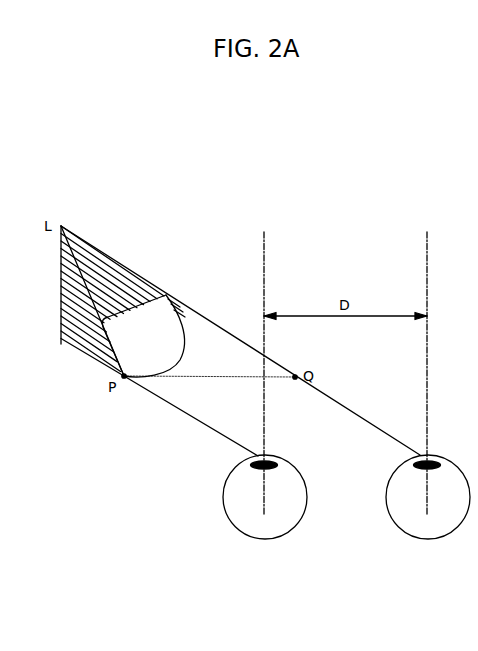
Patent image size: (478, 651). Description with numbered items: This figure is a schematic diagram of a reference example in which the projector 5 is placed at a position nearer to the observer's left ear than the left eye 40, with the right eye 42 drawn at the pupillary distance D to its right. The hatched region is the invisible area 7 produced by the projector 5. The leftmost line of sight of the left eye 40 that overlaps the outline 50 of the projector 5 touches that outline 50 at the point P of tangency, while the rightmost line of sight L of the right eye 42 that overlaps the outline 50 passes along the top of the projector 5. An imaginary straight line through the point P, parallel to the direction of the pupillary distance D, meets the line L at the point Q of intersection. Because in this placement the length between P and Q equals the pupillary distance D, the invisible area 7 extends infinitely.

The projector 5 is at (177, 352).
The invisible area 7 is at (92, 262).
The left eye 40 is at (255, 527).
The right eye 42 is at (438, 527).
The outline 50 is at (183, 320).